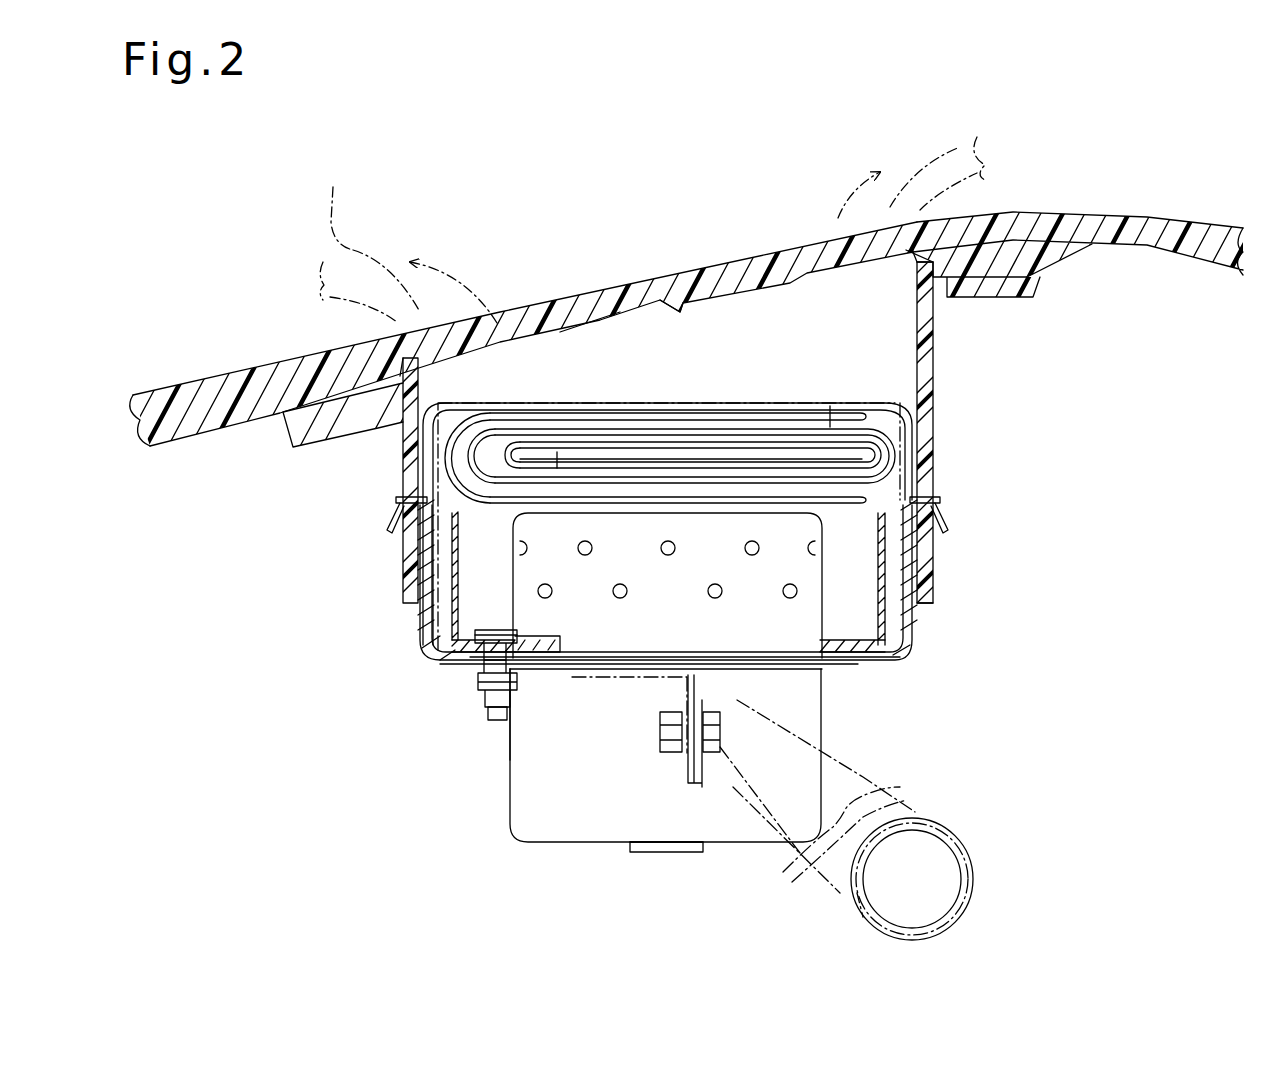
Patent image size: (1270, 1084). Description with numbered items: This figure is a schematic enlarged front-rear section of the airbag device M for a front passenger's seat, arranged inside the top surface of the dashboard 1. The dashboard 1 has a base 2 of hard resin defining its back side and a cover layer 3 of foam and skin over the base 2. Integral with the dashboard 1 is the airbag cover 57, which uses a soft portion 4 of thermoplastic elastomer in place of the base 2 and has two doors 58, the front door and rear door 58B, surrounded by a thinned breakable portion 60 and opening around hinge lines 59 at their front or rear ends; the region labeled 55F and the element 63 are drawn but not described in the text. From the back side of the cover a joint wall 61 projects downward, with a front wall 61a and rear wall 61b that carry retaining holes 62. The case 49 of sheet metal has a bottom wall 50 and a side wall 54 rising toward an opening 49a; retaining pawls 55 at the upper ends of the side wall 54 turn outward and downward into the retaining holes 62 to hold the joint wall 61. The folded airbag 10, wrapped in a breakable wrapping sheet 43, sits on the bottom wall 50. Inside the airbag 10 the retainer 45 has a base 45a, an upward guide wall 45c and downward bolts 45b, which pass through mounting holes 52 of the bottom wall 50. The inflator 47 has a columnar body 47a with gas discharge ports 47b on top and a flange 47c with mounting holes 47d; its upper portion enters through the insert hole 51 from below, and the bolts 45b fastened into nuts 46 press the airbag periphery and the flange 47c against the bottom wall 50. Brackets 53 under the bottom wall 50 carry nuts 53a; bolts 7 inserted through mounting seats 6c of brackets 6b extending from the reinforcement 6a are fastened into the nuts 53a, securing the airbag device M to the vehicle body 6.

The dashboard 1 is at (655, 289).
The base 2 is at (1195, 243).
The cover layer 3 is at (1145, 226).
The soft portion 4 is at (940, 418).
The vehicle body 6 is at (841, 831).
The reinforcement 6a is at (970, 862).
The bracket 6b is at (870, 770).
The mounting seat 6c is at (715, 848).
The bolt 7 is at (720, 742).
The airbag 10 is at (797, 408).
The wrapping sheet 43 is at (745, 402).
The retainer 45 is at (745, 582).
The base 45a is at (540, 655).
The bolt 45b is at (485, 712).
The guide wall 45c is at (882, 598).
The nut 46 is at (478, 690).
The inflator 47 is at (665, 813).
The body 47a is at (537, 815).
The gas discharge port 47b is at (712, 598).
The flange 47c is at (833, 668).
The mounting hole 47d is at (515, 690).
The case 49 is at (606, 561).
The opening 49a is at (433, 430).
The bottom wall 50 is at (880, 665).
The insert hole 51 is at (836, 672).
The mounting hole 52 is at (470, 665).
The bracket 53 is at (651, 753).
The nut 53a is at (651, 771).
The side wall 54 is at (425, 618).
The retaining pawl 55 is at (390, 528).
The front air flow 55F is at (401, 240).
The airbag cover 57 is at (960, 378).
The door 58 is at (548, 302).
The rear door 58B is at (963, 137).
The hinge line 59 is at (432, 366).
The breakable portion 60 is at (678, 300).
The joint wall 61 is at (655, 415).
The wall 61a is at (398, 438).
The wall 61b is at (935, 368).
The retaining hole 62 is at (405, 488).
The panel lower surface 63 is at (594, 340).
The airbag device M is at (496, 835).